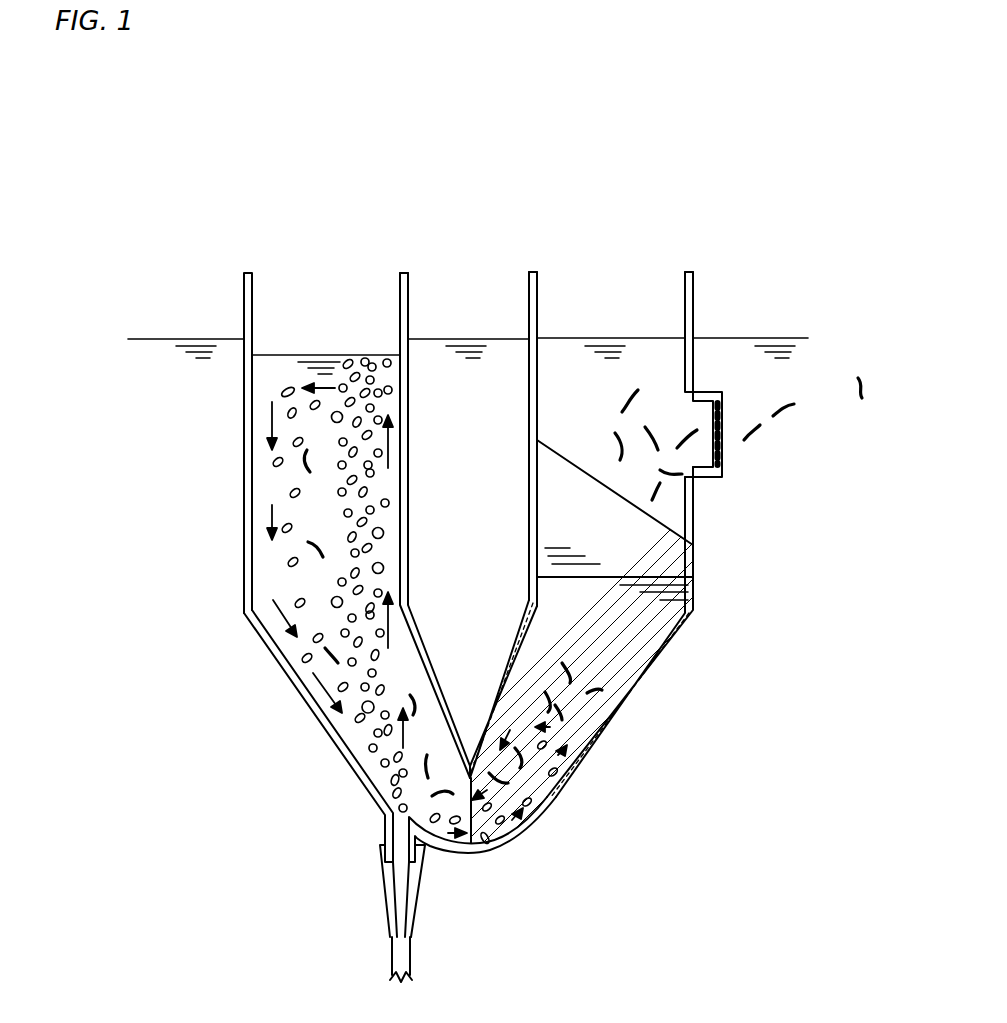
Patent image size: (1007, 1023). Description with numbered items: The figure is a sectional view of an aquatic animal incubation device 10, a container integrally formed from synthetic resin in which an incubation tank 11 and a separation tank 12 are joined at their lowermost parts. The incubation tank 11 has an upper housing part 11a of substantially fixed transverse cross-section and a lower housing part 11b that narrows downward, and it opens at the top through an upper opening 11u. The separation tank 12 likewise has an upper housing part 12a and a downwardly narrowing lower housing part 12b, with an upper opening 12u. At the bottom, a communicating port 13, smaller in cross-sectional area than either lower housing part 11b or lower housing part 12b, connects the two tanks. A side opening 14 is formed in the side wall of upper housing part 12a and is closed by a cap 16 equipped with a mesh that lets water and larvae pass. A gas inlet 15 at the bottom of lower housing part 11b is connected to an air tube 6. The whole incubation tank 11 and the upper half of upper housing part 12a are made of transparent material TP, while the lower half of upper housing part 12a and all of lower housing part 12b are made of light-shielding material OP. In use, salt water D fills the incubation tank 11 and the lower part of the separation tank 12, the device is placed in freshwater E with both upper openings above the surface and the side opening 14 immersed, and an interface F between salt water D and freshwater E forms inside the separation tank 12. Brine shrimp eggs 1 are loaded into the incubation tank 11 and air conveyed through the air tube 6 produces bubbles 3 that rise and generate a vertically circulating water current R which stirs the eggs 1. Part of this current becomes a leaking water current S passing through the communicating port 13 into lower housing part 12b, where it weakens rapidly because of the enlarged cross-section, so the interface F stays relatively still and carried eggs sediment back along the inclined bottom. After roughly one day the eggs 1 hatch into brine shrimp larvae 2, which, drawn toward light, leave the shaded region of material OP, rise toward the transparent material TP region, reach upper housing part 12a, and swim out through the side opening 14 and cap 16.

The incubation device 10 is at (485, 162).
The incubation tank 11 is at (243, 326).
The upper housing part 11a is at (245, 495).
The lower housing part 11b is at (306, 700).
The upper opening 11u is at (400, 278).
The separation tank 12 is at (527, 311).
The upper housing part 12a is at (532, 463).
The lower housing part 12b is at (618, 727).
The upper opening 12u is at (690, 276).
The communicating port 13 is at (497, 852).
The side opening 14 is at (718, 468).
The gas inlet 15 is at (384, 830).
The cap 16 is at (706, 393).
The brine shrimp eggs 1 is at (290, 563).
The brine shrimp larvae 2 is at (426, 690).
The bubbles 3 is at (384, 533).
The air tube 6 is at (392, 950).
The salt water D is at (334, 535).
The freshwater E is at (587, 418).
The interface F is at (690, 564).
The circulating water current R is at (262, 628).
The leaking water current S is at (545, 815).
The transparent material TP is at (331, 735).
The light-shielding material OP is at (587, 757).